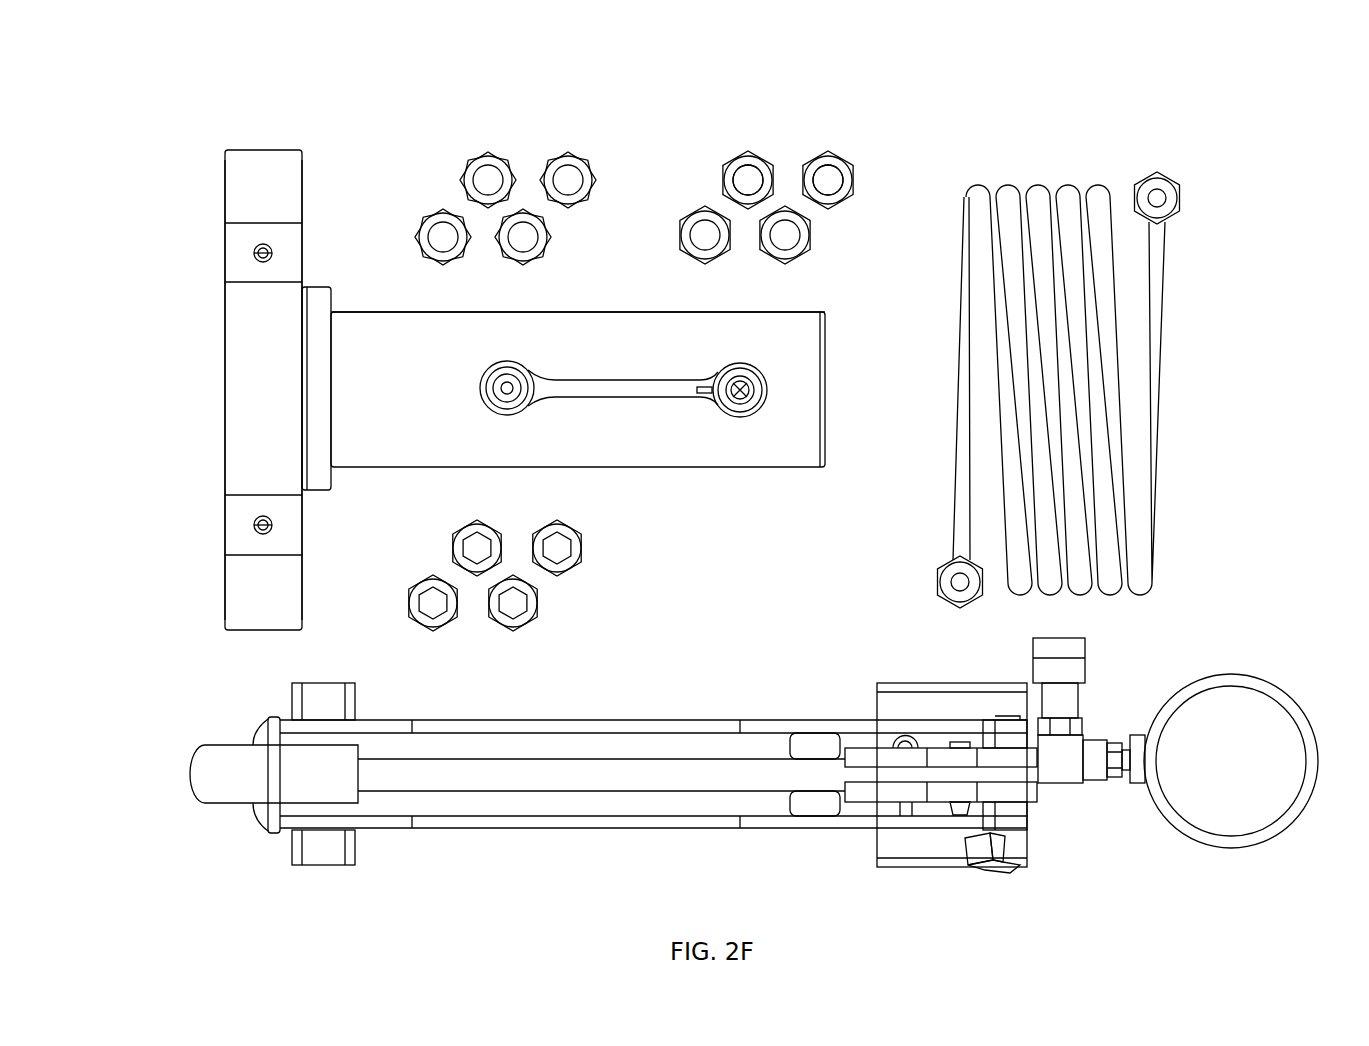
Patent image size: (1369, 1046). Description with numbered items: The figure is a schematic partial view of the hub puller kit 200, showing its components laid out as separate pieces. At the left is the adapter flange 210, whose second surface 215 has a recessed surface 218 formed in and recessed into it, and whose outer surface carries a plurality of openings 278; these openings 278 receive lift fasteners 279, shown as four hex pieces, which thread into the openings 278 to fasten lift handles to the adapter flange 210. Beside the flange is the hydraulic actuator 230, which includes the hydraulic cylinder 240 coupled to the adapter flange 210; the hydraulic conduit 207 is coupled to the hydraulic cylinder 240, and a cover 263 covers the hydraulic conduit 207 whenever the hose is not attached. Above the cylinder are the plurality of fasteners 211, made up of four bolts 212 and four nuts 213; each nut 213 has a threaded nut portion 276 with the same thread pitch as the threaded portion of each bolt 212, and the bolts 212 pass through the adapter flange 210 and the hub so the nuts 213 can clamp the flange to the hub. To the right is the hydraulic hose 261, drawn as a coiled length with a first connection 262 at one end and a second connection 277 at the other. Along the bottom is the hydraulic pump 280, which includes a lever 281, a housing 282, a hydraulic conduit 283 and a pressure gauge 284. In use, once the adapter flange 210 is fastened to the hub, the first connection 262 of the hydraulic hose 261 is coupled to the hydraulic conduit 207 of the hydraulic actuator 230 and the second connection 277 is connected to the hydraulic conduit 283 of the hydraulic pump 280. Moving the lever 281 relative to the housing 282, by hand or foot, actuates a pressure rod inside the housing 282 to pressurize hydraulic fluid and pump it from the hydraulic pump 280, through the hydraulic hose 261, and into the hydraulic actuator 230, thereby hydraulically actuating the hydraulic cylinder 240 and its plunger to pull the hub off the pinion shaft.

The hub puller kit 200 is at (1252, 103).
The hydraulic conduit 207 is at (762, 380).
The adapter flange 210 is at (262, 160).
The plurality of fasteners 211 is at (677, 86).
The bolts 212 is at (568, 165).
The nuts 213 is at (742, 160).
The second surface 215 is at (225, 184).
The recessed surface 218 is at (302, 185).
The hydraulic actuator 230 is at (415, 478).
The hydraulic cylinder 240 is at (772, 440).
The hydraulic hose 261 is at (1082, 578).
The first connection 262 is at (946, 584).
The cover 263 is at (494, 386).
The threaded nut portion 276 is at (756, 172).
The second connection 277 is at (1172, 198).
The openings 278 is at (254, 253).
The lift fasteners 279 is at (570, 542).
The hydraulic pump 280 is at (443, 856).
The lever 281 is at (515, 775).
The housing 282 is at (754, 745).
The hydraulic conduit 283 is at (1057, 656).
The pressure gauge 284 is at (1201, 834).